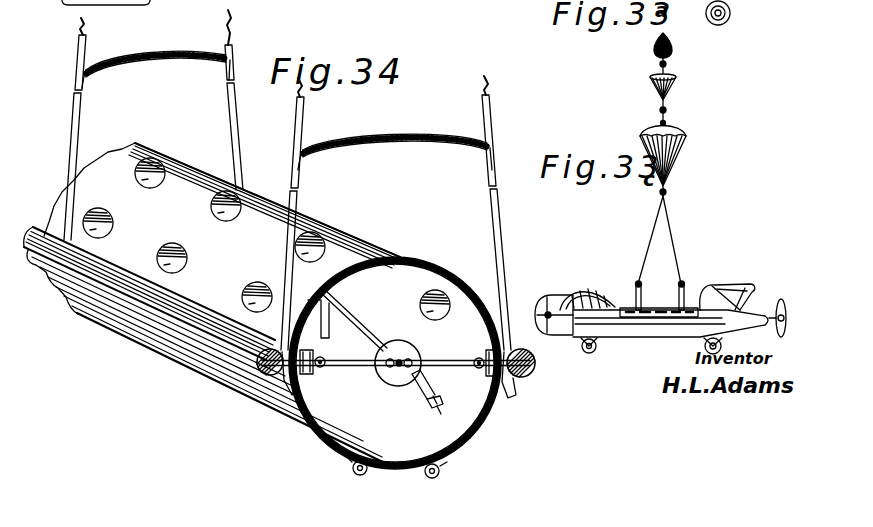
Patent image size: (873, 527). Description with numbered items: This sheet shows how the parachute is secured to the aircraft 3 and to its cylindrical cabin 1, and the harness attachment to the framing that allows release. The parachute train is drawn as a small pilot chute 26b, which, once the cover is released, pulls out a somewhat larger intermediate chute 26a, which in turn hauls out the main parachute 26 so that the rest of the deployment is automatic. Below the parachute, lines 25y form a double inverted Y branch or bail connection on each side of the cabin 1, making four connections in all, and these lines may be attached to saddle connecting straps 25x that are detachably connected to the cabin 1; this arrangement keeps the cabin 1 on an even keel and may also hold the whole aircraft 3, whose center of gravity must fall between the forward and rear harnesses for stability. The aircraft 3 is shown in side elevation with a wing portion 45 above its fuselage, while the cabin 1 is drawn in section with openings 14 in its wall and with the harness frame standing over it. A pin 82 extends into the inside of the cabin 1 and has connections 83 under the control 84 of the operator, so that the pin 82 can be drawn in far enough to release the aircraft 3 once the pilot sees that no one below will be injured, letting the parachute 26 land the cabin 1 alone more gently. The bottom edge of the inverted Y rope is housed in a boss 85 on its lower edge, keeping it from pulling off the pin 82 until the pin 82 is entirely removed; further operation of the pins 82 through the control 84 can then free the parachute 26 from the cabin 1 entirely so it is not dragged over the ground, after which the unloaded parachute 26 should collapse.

In FIG. 34, the cabin 1 is at (371, 244).
In FIG. 34, the aircraft 3 is at (38, 253).
In FIG. 34, the holes 14 is at (190, 262).
In FIG. 34, the saddle connecting straps 25x is at (88, 120).
In FIG. 34, the double inverted Y branch or bail connection 25y is at (502, 121).
In FIG. 33C, the double inverted Y branch or bail connection 25y is at (669, 234).
In FIG. 33C, the main parachute 26 is at (687, 130).
In FIG. 33C, the intermediate chute 26a is at (679, 84).
In FIG. 33C, the pilot chute 26b is at (674, 48).
In FIG. 33C, the wing 45 is at (609, 299).
In FIG. 34, the pin 82 is at (243, 345).
In FIG. 34, the connections 83 is at (356, 367).
In FIG. 34, the control 84 is at (436, 394).
In FIG. 34, the boss 85 is at (268, 393).